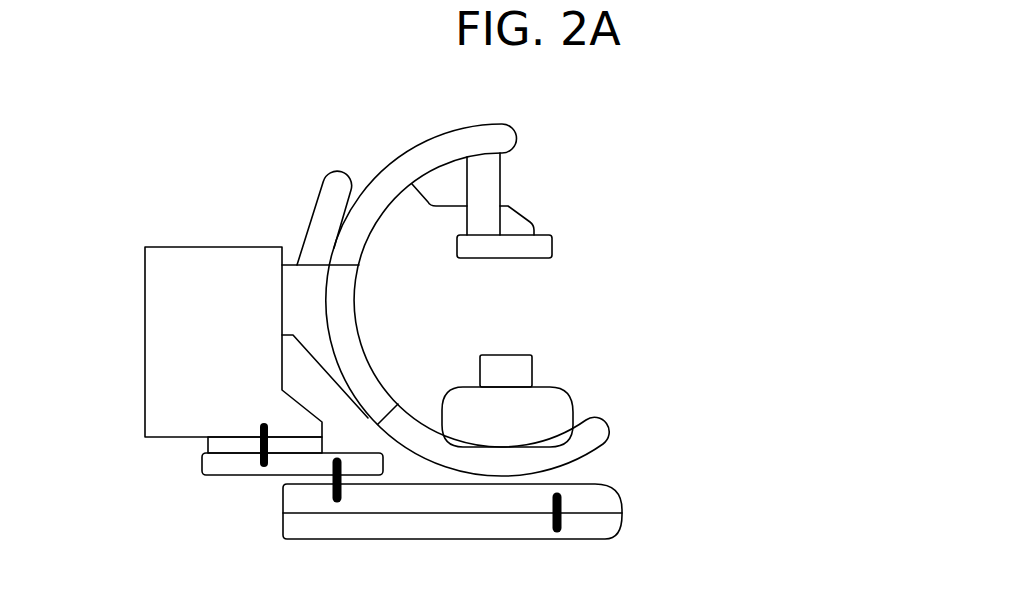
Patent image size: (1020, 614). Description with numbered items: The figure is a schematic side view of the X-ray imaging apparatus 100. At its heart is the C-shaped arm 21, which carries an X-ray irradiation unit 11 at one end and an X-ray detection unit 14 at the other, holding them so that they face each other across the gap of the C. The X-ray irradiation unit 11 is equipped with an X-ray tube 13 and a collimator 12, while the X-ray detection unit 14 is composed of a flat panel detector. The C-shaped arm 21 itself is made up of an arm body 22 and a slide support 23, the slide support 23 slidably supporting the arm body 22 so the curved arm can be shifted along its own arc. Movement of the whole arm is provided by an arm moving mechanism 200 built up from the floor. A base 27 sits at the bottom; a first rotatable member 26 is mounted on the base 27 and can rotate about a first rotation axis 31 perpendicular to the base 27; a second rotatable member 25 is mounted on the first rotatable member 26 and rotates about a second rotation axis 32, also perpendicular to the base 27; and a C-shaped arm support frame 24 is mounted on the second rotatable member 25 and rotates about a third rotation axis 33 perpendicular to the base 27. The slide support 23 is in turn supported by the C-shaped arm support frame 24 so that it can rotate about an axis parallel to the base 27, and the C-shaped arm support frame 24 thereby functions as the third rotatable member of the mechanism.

The X-ray imaging apparatus 100 is at (596, 173).
The X-ray irradiation unit 11 is at (557, 392).
The collimator 12 is at (531, 366).
The X-ray tube 13 is at (533, 407).
The X-ray detection unit 14 is at (543, 260).
The C-shaped arm 21 is at (445, 300).
The arm body 22 is at (366, 230).
The slide support 23 is at (364, 333).
The C-shaped arm support frame 24 is at (210, 265).
The second rotatable member 25 is at (217, 470).
The first rotatable member 26 is at (403, 500).
The base 27 is at (467, 523).
The first rotation axis 31 is at (562, 522).
The second rotation axis 32 is at (337, 500).
The third rotation axis 33 is at (263, 476).
The arm moving mechanism 200 is at (161, 470).